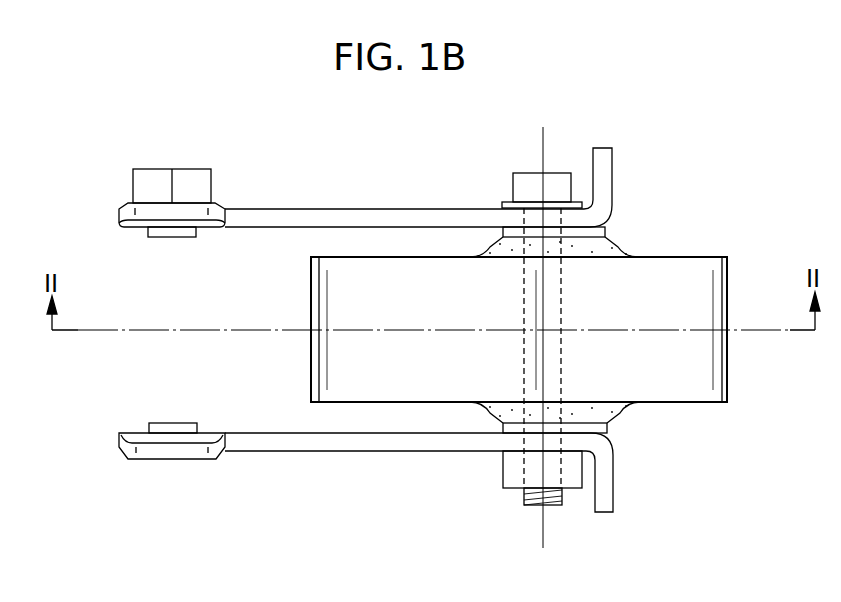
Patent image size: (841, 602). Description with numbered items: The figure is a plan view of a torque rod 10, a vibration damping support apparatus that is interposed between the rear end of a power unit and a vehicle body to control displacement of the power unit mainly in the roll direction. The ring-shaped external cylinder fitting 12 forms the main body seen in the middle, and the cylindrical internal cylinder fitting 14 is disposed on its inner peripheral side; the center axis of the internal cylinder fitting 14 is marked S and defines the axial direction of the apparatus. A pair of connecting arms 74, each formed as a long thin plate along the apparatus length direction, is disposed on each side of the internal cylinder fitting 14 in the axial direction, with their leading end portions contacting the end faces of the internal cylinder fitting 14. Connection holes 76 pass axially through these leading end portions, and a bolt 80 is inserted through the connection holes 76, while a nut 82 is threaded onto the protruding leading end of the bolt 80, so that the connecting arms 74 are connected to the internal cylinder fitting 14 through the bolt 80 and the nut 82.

The torque rod 10 is at (732, 152).
The external cylinder fitting 12 is at (731, 403).
The internal cylinder fitting 14 is at (606, 229).
The connecting arms 74 is at (116, 210).
The connection holes 76 is at (562, 218).
The bolt 80 is at (518, 173).
The nut 82 is at (503, 488).
The center axis S is at (544, 530).